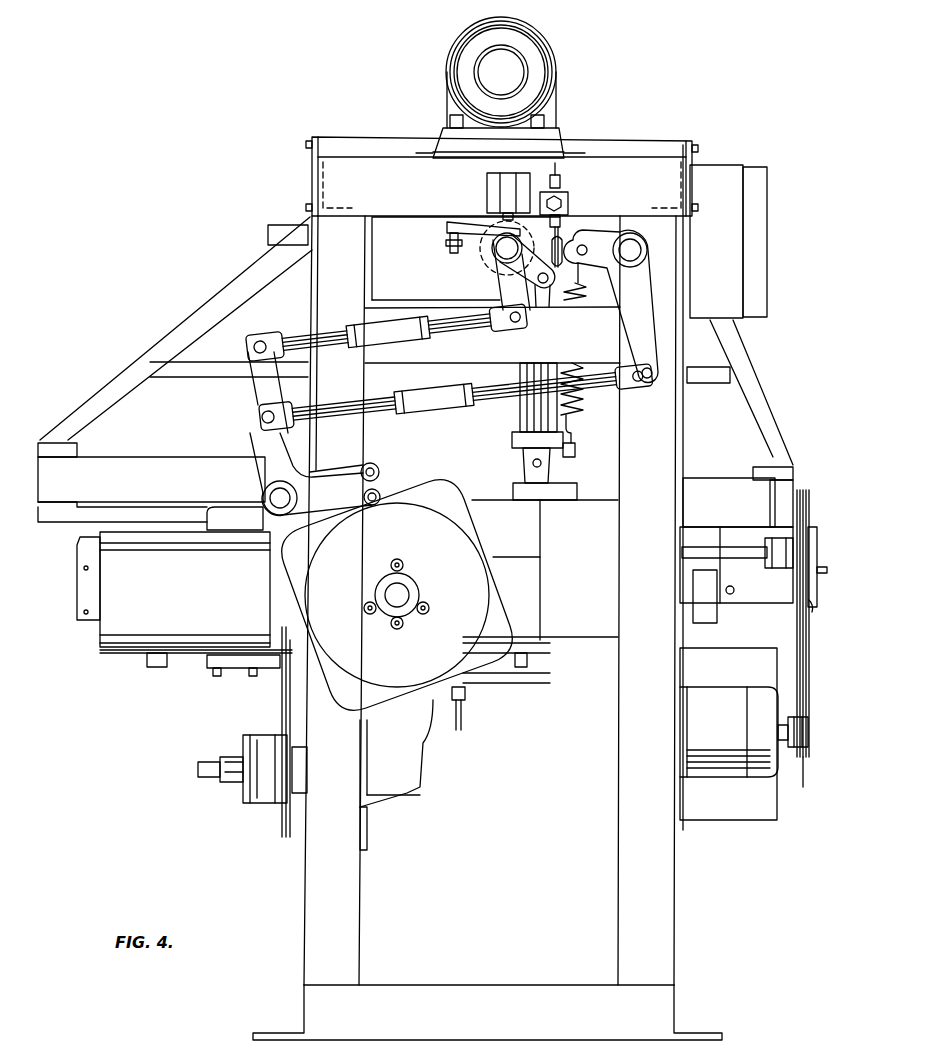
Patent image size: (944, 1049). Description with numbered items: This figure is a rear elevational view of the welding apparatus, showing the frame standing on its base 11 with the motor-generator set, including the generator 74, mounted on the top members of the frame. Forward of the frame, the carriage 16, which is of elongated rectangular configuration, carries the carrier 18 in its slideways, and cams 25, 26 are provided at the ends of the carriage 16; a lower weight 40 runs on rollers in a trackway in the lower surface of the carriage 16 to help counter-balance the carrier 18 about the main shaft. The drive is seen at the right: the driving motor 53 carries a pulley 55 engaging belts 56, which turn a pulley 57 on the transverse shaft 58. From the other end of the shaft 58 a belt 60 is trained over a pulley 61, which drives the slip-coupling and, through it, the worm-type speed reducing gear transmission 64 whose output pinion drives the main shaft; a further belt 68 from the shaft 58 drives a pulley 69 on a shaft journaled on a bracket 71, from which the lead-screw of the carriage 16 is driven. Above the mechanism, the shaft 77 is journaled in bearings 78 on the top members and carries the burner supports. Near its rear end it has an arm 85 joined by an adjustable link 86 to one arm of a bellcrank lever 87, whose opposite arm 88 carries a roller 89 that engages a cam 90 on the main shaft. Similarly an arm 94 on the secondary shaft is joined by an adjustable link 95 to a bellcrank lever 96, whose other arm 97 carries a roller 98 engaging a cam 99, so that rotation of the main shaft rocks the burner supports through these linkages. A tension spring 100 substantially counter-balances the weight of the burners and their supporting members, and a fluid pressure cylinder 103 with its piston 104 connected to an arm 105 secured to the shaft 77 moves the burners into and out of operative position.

The base 11 is at (445, 986).
The generator 74 is at (548, 42).
The arm 105 is at (557, 240).
The shaft 77 is at (500, 245).
The bearings 78 is at (500, 255).
The arm 85 is at (500, 289).
The piston 104 is at (542, 295).
The adjustable link 86 is at (474, 325).
The arm 94 is at (633, 302).
The tension spring 100 is at (580, 403).
The adjustable link 95 is at (504, 400).
The bellcrank lever 87 is at (258, 401).
The bellcrank lever 96 is at (265, 478).
The arm 97 is at (320, 488).
The arm 88 is at (343, 474).
The roller 89 is at (380, 465).
The roller 98 is at (382, 494).
The cam 90 is at (432, 472).
The cam 99 is at (485, 605).
The fluid pressure cylinder 103 is at (518, 418).
The carriage 16 is at (114, 663).
The cam 26 is at (85, 545).
The carrier 18 is at (197, 663).
The belt 60 is at (286, 690).
The pulley 61 is at (283, 835).
The lower weight 40 is at (495, 683).
The speed reducing gear transmission 64 is at (433, 740).
The bracket 71 is at (778, 597).
The shaft 58 is at (760, 556).
The cam 25 is at (710, 645).
The pulley 57 is at (805, 488).
The pulley 69 is at (813, 526).
The belt 68 is at (820, 615).
The driving motor 53 is at (723, 772).
The belts 56 is at (804, 680).
The pulley 55 is at (803, 784).